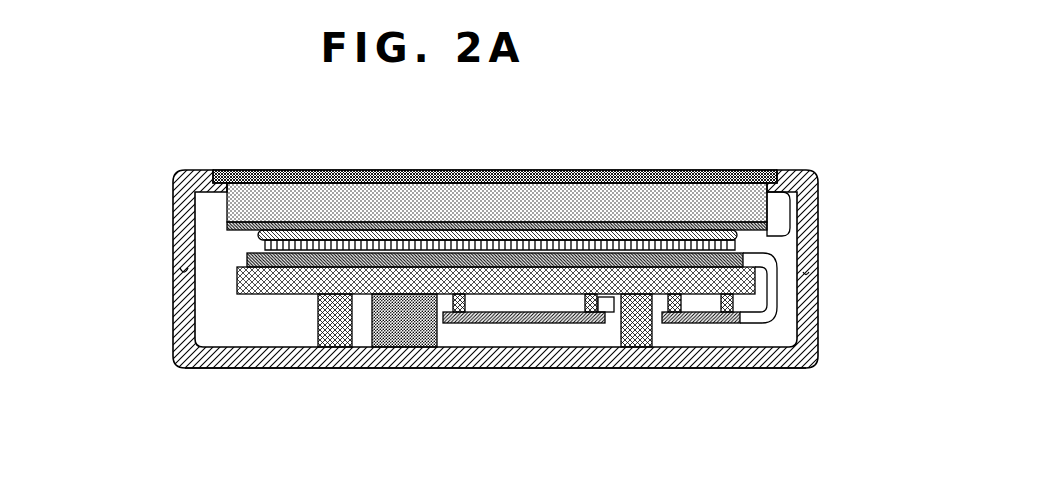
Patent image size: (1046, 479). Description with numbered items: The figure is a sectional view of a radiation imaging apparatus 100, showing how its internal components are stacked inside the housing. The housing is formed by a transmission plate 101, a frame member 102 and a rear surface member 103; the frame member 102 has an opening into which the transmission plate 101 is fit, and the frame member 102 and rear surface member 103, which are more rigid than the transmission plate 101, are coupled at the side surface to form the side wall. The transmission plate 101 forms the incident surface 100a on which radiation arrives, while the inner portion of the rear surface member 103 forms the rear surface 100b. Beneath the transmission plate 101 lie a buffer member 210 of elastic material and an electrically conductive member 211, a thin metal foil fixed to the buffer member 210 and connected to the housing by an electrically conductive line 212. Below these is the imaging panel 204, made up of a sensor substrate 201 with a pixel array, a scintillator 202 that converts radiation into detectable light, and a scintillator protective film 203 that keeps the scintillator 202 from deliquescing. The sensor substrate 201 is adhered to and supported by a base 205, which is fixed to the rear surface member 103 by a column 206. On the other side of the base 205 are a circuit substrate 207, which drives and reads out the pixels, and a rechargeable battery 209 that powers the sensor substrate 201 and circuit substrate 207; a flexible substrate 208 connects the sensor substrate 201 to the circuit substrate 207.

The radiation imaging apparatus 100 is at (202, 124).
The incident surface 100a is at (539, 170).
The rear surface 100b is at (565, 369).
The transmission plate 101 is at (341, 178).
The frame member 102 is at (172, 176).
The rear surface member 103 is at (183, 322).
The sensor substrate 201 is at (247, 260).
The scintillator 202 is at (265, 246).
The scintillator protective film 203 is at (258, 234).
The imaging panel 204 is at (397, 235).
The base 205 is at (259, 295).
The column 206 is at (335, 320).
The circuit substrate 207 is at (518, 324).
The flexible substrate 208 is at (764, 326).
The rechargeable battery 209 is at (402, 322).
The buffer member 210 is at (291, 200).
The electrically conductive member 211 is at (242, 217).
The electrically conductive line 212 is at (784, 232).